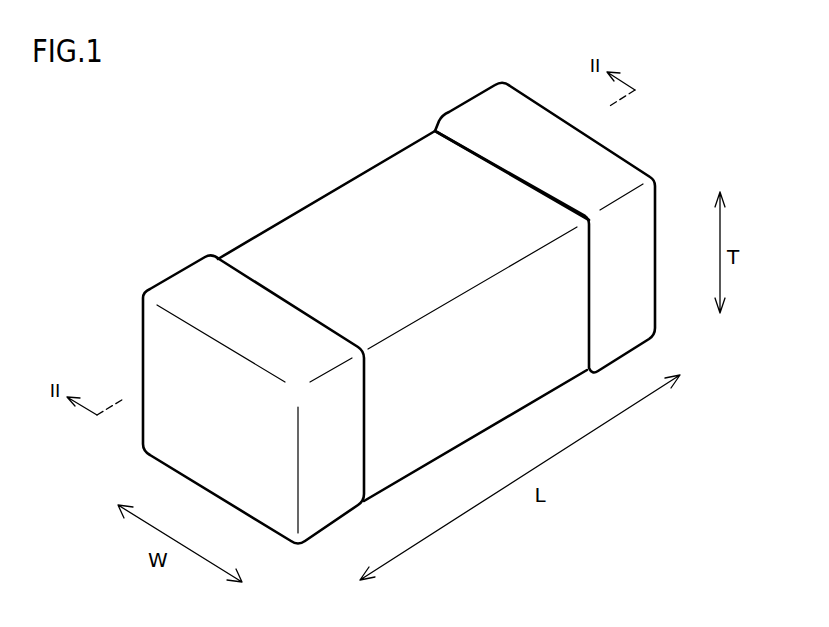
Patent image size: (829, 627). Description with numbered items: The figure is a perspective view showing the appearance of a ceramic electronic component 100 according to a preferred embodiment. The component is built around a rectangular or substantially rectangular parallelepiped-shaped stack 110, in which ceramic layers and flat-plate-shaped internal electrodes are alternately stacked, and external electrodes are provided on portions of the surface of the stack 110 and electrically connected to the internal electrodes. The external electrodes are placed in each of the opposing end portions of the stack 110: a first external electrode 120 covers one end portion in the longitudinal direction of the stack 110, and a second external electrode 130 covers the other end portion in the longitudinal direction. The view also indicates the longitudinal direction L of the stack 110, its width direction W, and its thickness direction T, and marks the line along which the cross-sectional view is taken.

The ceramic electronic component 100 is at (424, 299).
The stack 110 is at (333, 189).
The first external electrode 120 is at (472, 99).
The second external electrode 130 is at (181, 274).